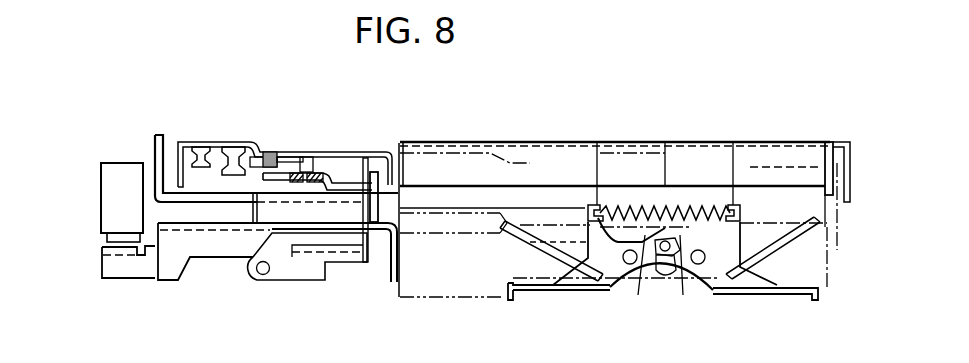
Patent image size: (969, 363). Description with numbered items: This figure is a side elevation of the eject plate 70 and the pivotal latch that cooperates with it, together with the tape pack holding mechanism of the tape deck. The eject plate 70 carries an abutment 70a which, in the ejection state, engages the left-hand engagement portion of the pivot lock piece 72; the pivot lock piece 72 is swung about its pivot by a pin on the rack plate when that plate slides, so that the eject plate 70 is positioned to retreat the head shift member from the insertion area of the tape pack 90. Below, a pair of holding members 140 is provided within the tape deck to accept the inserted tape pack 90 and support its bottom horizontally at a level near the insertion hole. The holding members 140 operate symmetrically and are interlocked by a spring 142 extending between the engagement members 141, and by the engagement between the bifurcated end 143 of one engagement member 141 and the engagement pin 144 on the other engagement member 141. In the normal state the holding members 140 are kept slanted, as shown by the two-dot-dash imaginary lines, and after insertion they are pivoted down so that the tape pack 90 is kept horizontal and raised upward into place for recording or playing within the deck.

The eject plate 70 is at (344, 182).
The abutment 70a is at (307, 157).
The pivot lock piece 72 is at (285, 157).
The tape pack 90 is at (830, 228).
The holding member 140 is at (512, 236).
The engagement member 141 is at (593, 205).
The spring 142 is at (667, 210).
The bifurcated end 143 is at (670, 262).
The engagement pin 144 is at (653, 265).